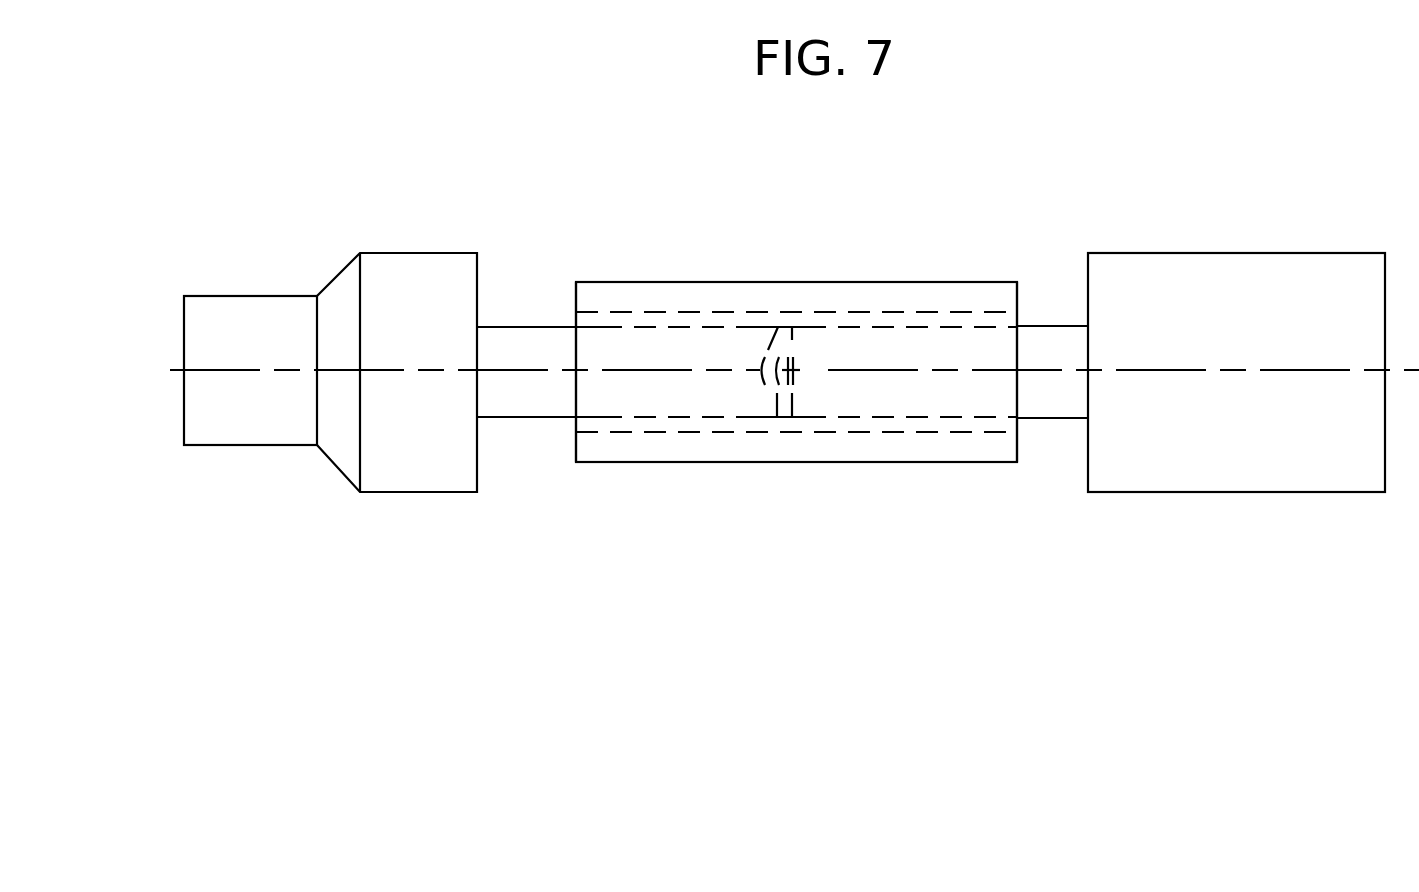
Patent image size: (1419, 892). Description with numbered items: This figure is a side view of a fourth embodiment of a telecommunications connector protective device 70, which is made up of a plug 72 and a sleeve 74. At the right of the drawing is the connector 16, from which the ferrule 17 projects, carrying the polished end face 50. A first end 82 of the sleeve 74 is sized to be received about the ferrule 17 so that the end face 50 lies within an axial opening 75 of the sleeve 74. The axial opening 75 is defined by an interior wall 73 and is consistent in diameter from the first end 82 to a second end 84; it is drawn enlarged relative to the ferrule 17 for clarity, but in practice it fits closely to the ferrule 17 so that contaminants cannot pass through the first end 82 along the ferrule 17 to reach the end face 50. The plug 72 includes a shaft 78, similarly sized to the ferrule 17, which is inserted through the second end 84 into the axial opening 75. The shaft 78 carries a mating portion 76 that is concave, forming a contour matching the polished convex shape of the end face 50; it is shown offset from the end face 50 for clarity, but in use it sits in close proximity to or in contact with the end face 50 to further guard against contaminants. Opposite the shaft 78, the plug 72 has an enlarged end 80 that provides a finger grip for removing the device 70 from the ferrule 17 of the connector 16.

The connector 16 is at (1212, 295).
The ferrule 17 is at (1050, 338).
The end face 50 is at (792, 338).
The protective device 70 is at (620, 218).
The plug 72 is at (406, 485).
The interior wall 73 is at (948, 312).
The sleeve 74 is at (677, 440).
The axial opening 75 is at (848, 420).
The mating portion 76 is at (770, 390).
The shaft 78 is at (517, 403).
The enlarged end 80 is at (230, 423).
The first end 82 is at (1016, 445).
The second end 84 is at (576, 292).